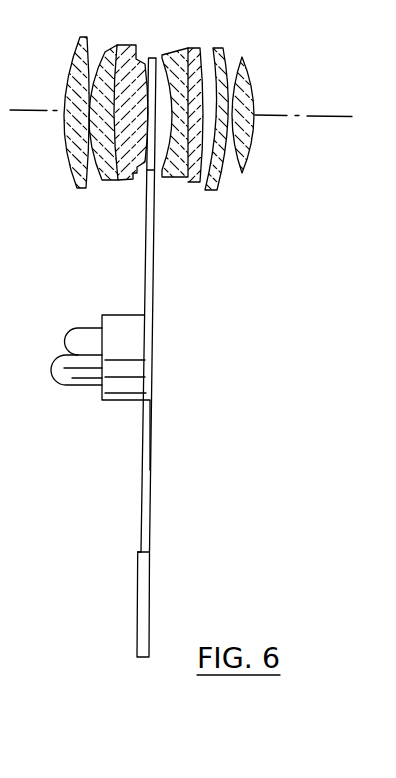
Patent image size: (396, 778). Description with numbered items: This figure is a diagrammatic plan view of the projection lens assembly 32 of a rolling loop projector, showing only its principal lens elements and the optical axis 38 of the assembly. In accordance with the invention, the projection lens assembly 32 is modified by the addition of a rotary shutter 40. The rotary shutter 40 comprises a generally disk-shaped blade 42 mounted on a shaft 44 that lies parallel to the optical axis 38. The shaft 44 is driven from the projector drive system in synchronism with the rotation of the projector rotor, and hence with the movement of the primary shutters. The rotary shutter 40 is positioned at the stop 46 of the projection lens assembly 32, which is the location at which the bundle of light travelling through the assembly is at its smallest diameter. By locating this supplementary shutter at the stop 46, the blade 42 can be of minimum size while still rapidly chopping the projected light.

The projection lens assembly 32 is at (176, 211).
The optical axis 38 is at (335, 115).
The rotary shutter 40 is at (178, 384).
The blade 42 is at (152, 245).
The shaft 44 is at (88, 378).
The stop 46 is at (140, 181).